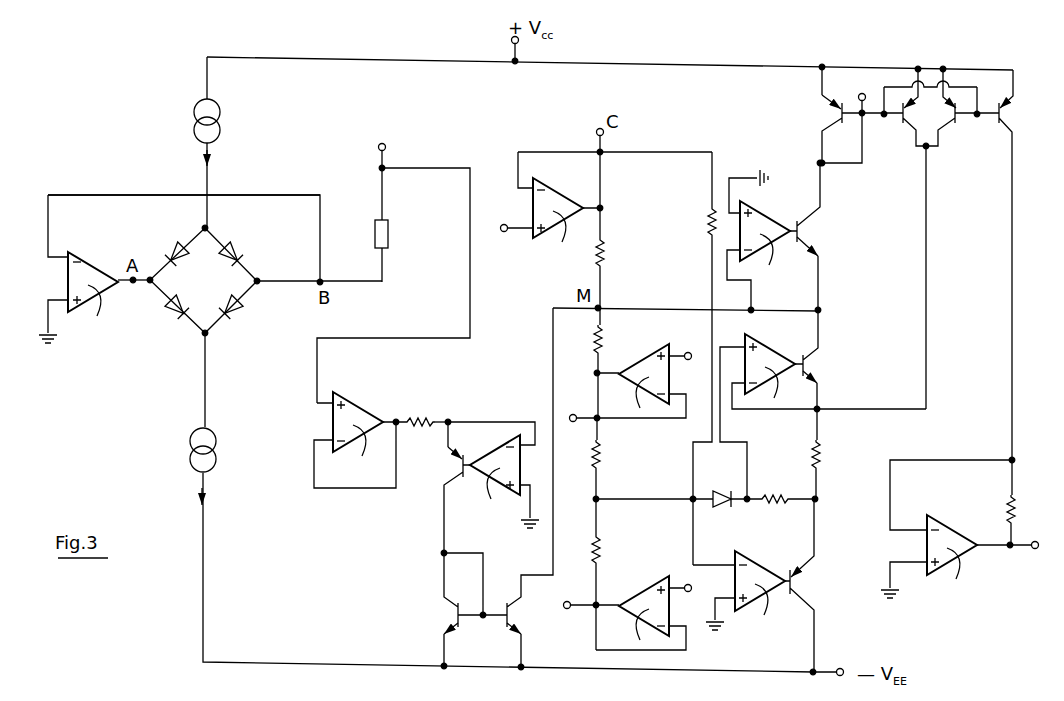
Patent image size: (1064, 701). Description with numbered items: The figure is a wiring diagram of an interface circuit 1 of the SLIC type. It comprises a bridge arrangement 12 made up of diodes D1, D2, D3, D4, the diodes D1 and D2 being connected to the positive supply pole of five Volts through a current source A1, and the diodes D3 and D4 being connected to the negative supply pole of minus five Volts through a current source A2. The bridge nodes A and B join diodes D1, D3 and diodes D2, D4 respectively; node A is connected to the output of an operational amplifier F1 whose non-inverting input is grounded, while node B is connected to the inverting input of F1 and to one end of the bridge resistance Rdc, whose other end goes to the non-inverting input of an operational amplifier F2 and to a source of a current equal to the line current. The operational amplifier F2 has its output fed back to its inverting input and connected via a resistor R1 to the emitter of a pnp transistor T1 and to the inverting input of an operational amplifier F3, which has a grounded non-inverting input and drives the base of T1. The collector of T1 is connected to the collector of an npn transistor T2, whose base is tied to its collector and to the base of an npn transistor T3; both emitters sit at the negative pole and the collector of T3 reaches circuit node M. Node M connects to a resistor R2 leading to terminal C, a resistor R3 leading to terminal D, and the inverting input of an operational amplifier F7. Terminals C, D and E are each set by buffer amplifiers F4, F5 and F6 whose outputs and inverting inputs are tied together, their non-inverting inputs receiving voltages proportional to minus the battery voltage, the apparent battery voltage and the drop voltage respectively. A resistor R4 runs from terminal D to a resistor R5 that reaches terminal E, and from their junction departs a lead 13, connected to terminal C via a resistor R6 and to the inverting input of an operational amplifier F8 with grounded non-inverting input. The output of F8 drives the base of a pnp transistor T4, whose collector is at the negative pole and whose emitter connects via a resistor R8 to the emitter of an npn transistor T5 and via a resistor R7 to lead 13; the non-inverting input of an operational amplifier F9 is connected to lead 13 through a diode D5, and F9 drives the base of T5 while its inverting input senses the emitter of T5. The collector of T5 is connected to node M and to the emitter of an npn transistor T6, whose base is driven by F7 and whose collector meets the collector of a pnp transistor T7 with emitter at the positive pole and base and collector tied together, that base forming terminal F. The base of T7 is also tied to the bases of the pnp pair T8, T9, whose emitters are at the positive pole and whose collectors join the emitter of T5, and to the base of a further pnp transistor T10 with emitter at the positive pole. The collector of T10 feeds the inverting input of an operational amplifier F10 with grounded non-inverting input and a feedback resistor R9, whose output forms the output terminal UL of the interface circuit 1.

The interface circuit 1 is at (172, 385).
The bridge arrangement 12 is at (203, 283).
The lead 13 is at (643, 499).
The current source A1 is at (223, 121).
The current source A2 is at (217, 450).
The diode D1 is at (168, 246).
The diode D2 is at (240, 247).
The diode D3 is at (167, 312).
The diode D4 is at (242, 312).
The diode D5 is at (720, 509).
The operational amplifier F1 is at (110, 296).
The operational amplifier F2 is at (359, 436).
The operational amplifier F3 is at (493, 475).
The operational amplifier F4 is at (548, 204).
The operational amplifier F5 is at (629, 374).
The operational amplifier F6 is at (629, 607).
The operational amplifier F7 is at (758, 241).
The operational amplifier F8 is at (741, 598).
The operational amplifier F9 is at (823, 409).
The operational amplifier F10 is at (963, 529).
The resistor R1 is at (428, 411).
The resistor R2 is at (613, 281).
The resistor R3 is at (611, 371).
The resistor R4 is at (610, 476).
The resistor R5 is at (610, 592).
The resistor R6 is at (698, 358).
The resistor R7 is at (781, 489).
The resistor R8 is at (829, 455).
The resistor R9 is at (1025, 501).
The bridge resistance Rdc is at (393, 274).
The transistor T1 is at (455, 487).
The transistor T2 is at (453, 609).
The transistor T3 is at (518, 489).
The transistor T4 is at (808, 585).
The transistor T5 is at (816, 359).
The transistor T6 is at (813, 236).
The transistor T7 is at (839, 115).
The transistor T8 is at (903, 103).
The transistor T9 is at (962, 227).
The transistor T10 is at (1022, 253).